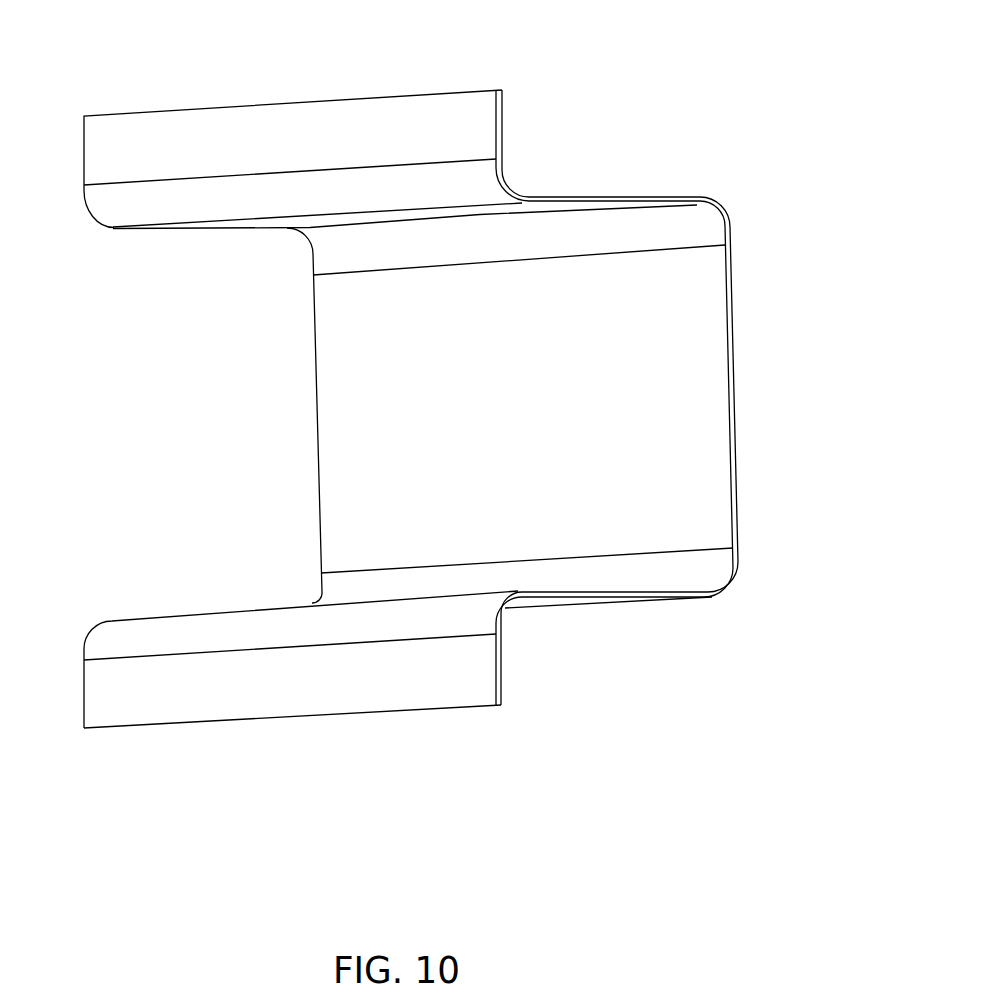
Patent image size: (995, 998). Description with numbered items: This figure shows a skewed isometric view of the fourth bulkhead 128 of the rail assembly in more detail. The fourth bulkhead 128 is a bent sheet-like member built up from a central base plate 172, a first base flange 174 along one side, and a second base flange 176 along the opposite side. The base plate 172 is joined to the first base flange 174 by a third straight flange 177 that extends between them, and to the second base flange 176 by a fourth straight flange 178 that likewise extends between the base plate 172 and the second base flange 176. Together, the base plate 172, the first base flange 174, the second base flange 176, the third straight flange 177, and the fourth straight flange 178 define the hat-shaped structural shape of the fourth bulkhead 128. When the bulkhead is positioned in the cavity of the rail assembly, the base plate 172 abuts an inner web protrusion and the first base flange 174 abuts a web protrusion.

The fourth bulkhead 128 is at (411, 366).
The base plate 172 is at (314, 393).
The first base flange 174 is at (504, 142).
The second base flange 176 is at (502, 637).
The third straight flange 177 is at (642, 196).
The fourth straight flange 178 is at (645, 597).